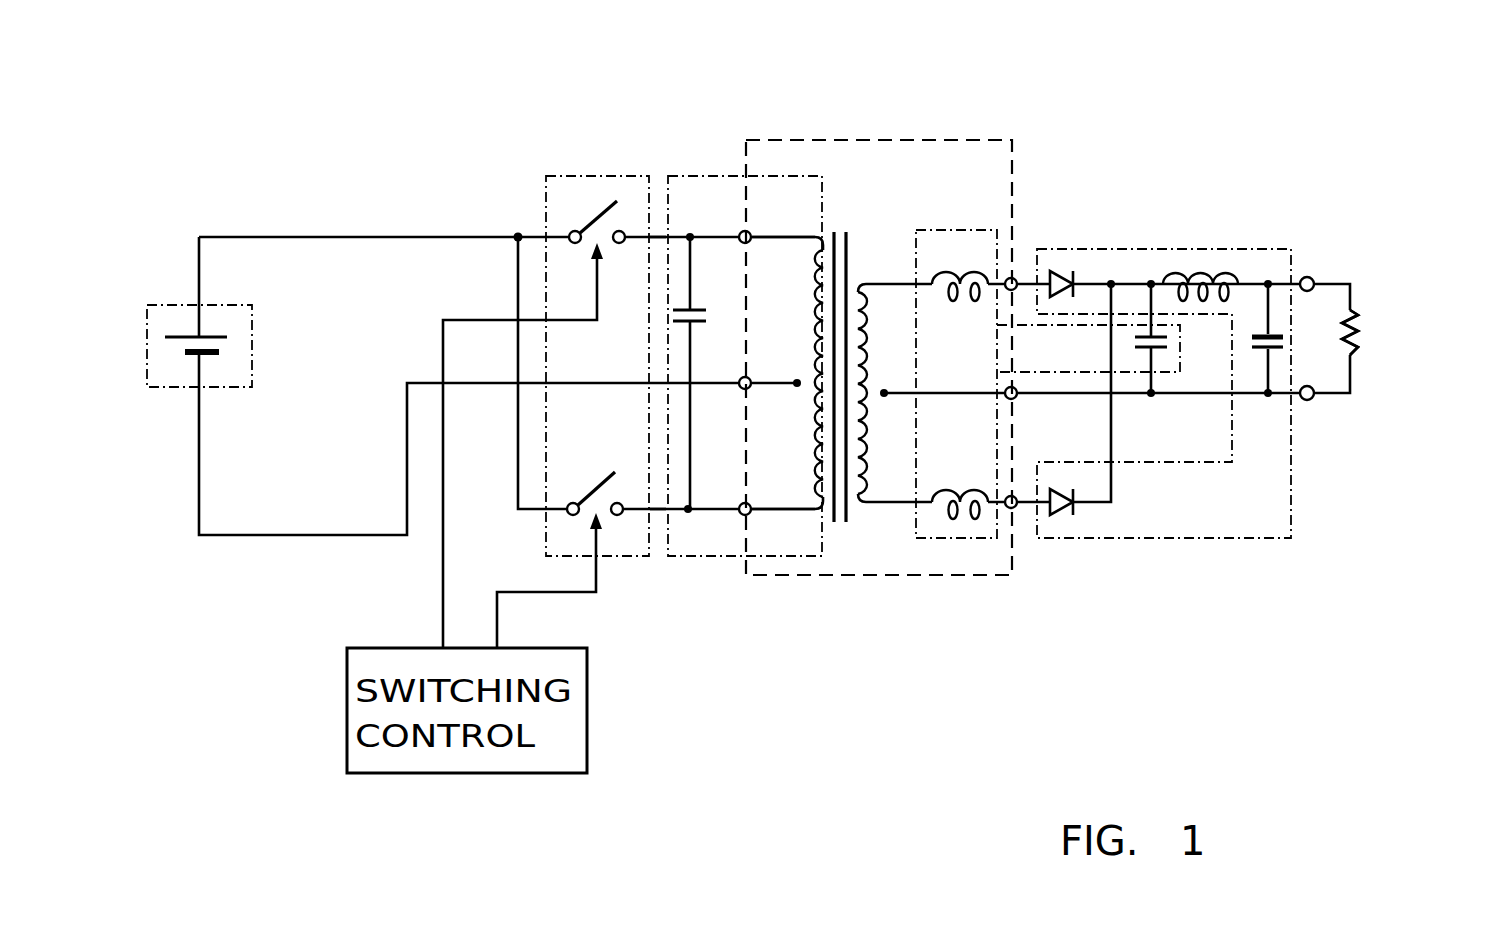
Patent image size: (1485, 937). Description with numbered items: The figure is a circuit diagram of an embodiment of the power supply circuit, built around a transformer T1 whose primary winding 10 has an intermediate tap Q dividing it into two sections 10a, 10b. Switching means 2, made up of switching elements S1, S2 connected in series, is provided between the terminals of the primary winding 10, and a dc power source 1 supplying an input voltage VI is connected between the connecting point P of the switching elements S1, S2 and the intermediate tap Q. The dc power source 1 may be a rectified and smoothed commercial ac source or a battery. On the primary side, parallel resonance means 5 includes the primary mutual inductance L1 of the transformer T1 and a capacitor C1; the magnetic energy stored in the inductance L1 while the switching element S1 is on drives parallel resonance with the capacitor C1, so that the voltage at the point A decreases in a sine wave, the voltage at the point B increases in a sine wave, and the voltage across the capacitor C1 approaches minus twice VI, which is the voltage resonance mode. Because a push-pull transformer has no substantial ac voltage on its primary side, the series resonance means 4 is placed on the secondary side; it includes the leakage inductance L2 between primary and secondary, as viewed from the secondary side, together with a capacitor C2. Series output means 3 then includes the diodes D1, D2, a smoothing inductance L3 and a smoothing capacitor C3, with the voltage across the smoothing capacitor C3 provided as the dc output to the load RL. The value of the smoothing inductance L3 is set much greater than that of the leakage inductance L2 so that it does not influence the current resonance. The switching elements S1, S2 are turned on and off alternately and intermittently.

The dc power source 1 is at (177, 390).
The input voltage VI is at (227, 354).
The connecting point P is at (518, 236).
The switching means 2 is at (622, 558).
The switching element S1 is at (598, 222).
The switching element S2 is at (602, 477).
The point A is at (657, 237).
The point B is at (657, 512).
The parallel resonance means 5 is at (707, 558).
The capacitor C1 is at (705, 312).
The transformer T1 is at (887, 140).
The primary winding 10 is at (823, 183).
The primary winding section 10a is at (790, 258).
The primary winding section 10b is at (790, 500).
The primary mutual inductance L1 is at (800, 272).
The intermediate tap Q is at (797, 383).
The series resonance means 4 is at (937, 540).
The leakage inductance L2 is at (952, 300).
The series output means 3 is at (1292, 470).
The diode D1 is at (1058, 250).
The diode D2 is at (1058, 520).
The capacitor C2 is at (1137, 335).
The smoothing inductance L3 is at (1206, 275).
The smoothing capacitor C3 is at (1262, 345).
The load RL is at (1358, 322).